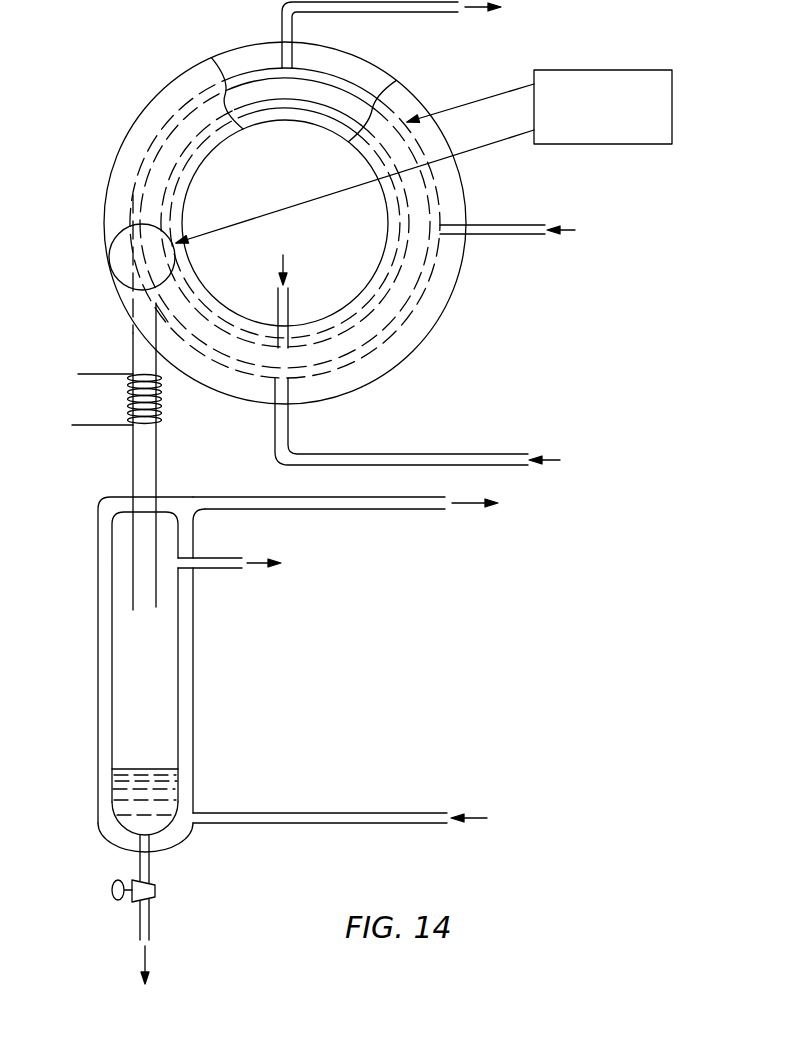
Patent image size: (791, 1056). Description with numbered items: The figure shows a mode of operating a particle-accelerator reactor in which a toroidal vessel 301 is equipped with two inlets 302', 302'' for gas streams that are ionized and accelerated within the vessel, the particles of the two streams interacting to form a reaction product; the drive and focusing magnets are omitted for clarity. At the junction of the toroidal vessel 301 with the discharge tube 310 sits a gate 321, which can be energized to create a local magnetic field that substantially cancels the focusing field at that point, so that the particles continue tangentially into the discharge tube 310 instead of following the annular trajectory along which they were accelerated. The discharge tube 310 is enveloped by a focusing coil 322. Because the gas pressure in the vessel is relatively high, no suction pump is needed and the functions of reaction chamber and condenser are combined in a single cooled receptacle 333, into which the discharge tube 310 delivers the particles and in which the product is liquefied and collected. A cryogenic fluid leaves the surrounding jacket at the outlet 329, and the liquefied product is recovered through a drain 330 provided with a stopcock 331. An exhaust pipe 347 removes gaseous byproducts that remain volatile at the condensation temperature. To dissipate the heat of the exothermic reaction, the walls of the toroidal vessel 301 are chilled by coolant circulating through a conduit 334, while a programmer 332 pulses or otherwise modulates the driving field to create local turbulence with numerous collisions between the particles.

The toroidal vessel 301 is at (448, 303).
The inlet 302' is at (507, 208).
The inlet 302'' is at (316, 301).
The discharge tube 310 is at (137, 469).
The gate 321 is at (108, 242).
The focusing coil 322 is at (163, 405).
The cryogenic fluid outlet 329 is at (387, 512).
The drain 330 is at (143, 870).
The stopcock 331 is at (160, 890).
The programmer 332 is at (657, 70).
The cooled receptacle 333 is at (172, 720).
The coolant conduit 334 is at (455, 452).
The exhaust pipe 347 is at (212, 570).